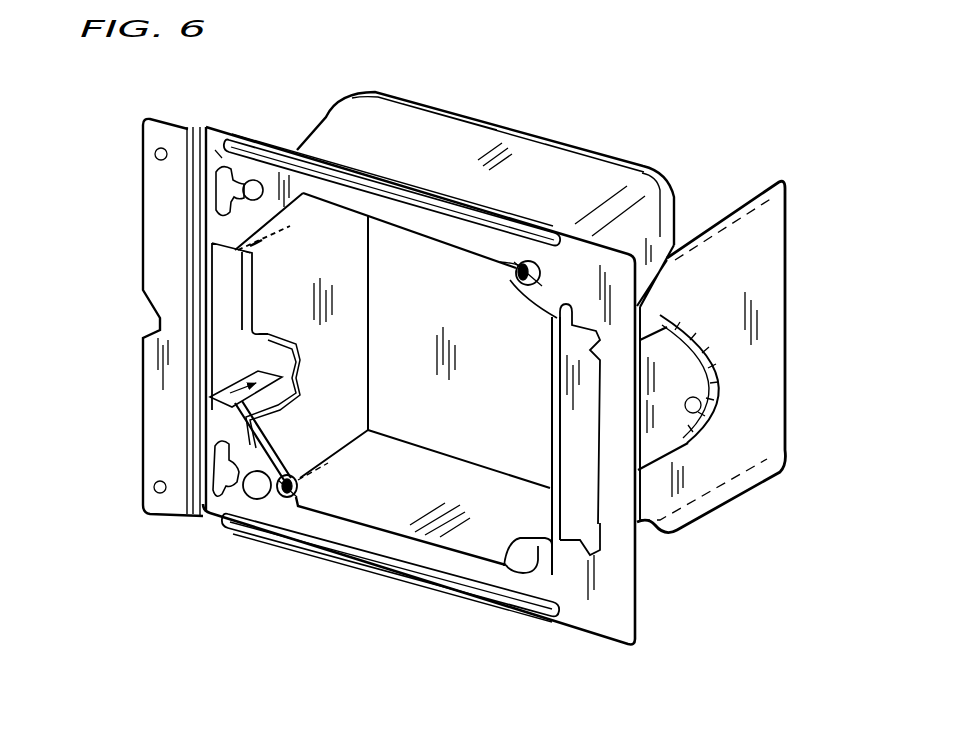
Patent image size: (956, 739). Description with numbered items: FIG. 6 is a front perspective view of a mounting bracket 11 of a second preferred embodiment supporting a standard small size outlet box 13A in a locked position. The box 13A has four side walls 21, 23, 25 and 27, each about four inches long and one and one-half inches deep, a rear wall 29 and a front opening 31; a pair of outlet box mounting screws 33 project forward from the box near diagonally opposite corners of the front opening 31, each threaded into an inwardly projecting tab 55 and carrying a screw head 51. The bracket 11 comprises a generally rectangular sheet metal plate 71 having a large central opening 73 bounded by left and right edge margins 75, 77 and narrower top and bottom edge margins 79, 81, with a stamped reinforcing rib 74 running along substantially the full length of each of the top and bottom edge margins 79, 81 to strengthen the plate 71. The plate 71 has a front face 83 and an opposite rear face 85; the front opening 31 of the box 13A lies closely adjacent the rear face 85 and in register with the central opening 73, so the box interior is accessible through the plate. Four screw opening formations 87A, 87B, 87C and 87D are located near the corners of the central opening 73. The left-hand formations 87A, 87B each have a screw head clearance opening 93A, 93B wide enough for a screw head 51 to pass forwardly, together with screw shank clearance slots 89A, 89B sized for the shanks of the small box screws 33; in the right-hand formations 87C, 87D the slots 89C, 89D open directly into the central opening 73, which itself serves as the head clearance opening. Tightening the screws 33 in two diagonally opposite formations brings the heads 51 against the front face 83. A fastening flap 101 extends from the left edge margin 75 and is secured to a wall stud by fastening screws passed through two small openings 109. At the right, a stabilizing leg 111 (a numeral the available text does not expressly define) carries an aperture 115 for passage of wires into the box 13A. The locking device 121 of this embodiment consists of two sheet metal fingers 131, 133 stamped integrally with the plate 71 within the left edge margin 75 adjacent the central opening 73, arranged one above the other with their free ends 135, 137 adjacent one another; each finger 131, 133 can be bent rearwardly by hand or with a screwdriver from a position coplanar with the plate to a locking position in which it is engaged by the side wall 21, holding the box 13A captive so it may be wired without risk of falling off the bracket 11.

The mounting bracket 11 is at (108, 82).
The small size outlet box 13A is at (553, 142).
The side wall 21 is at (345, 328).
The side wall 23 is at (396, 502).
The side wall 25 is at (658, 222).
The side wall 27 is at (393, 113).
The rear wall 29 is at (497, 363).
The front opening 31 is at (548, 400).
The outlet box mounting screw 33 is at (532, 262).
The screw head 51 is at (546, 262).
The inwardly projecting tab 55 is at (515, 275).
The sheet metal plate 71 is at (636, 594).
The central opening 73 is at (247, 442).
The reinforcing rib 74 is at (414, 200).
The left edge margin 75 is at (215, 223).
The right edge margin 77 is at (627, 553).
The top edge margin 79 is at (378, 205).
The bottom edge margin 81 is at (387, 548).
The front face 83 is at (603, 465).
The rear face 85 is at (320, 466).
The screw opening formation 87A is at (222, 154).
The screw opening formation 87B is at (272, 458).
The screw opening formation 87C is at (508, 296).
The screw opening formation 87D is at (527, 528).
The screw shank clearance slot 89A is at (256, 180).
The screw shank clearance slot 89B is at (243, 484).
The screw shank clearance slot 89C is at (492, 264).
The screw shank clearance slot 89D is at (530, 565).
The screw head clearance opening 93A is at (216, 193).
The screw head clearance opening 93B is at (210, 493).
The fastening flap 101 is at (144, 344).
The small opening 109 is at (157, 149).
The side bracket plate 111 is at (765, 255).
The aperture 115 is at (700, 417).
The locking device 121 is at (232, 352).
The sheet metal finger 131 is at (275, 237).
The sheet metal finger 133 is at (225, 393).
The free end 135 is at (290, 226).
The free end 137 is at (260, 370).